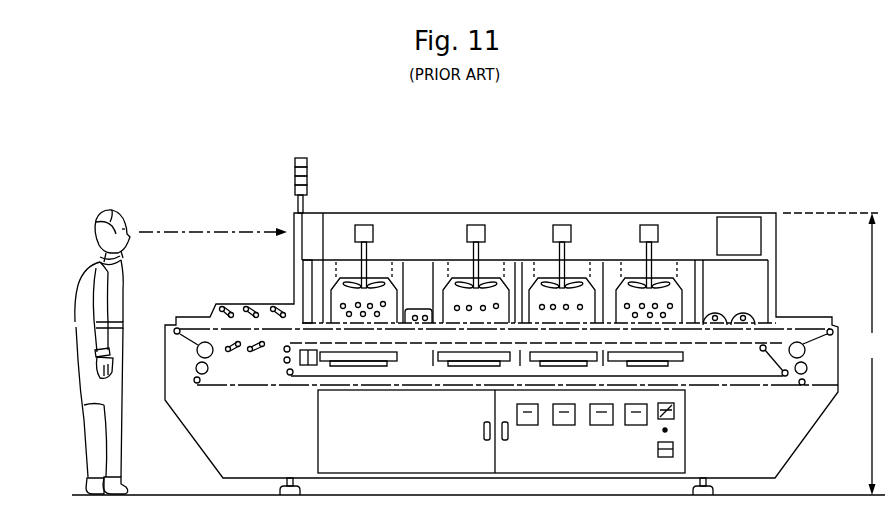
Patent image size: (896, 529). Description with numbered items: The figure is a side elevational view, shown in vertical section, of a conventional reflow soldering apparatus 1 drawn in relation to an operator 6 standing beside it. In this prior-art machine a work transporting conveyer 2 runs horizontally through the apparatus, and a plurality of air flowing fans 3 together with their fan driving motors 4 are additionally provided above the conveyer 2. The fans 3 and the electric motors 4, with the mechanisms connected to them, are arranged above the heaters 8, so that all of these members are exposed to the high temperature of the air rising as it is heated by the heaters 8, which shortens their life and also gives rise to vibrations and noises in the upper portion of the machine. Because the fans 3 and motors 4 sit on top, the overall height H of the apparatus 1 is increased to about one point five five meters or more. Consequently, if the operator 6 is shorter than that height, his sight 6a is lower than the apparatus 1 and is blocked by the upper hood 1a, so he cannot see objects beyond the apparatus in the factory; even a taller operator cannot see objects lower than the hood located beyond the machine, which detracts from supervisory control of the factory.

The reflow soldering apparatus 1 is at (745, 203).
The upper hood 1a is at (293, 219).
The work transporting conveyer 2 is at (805, 330).
The air flowing fans 3 is at (658, 282).
The fan driving motors 4 is at (647, 225).
The operator 6 is at (128, 285).
The sight of the operator 6a is at (207, 232).
The heaters 8 is at (669, 304).
The height of the apparatus H is at (830, 354).